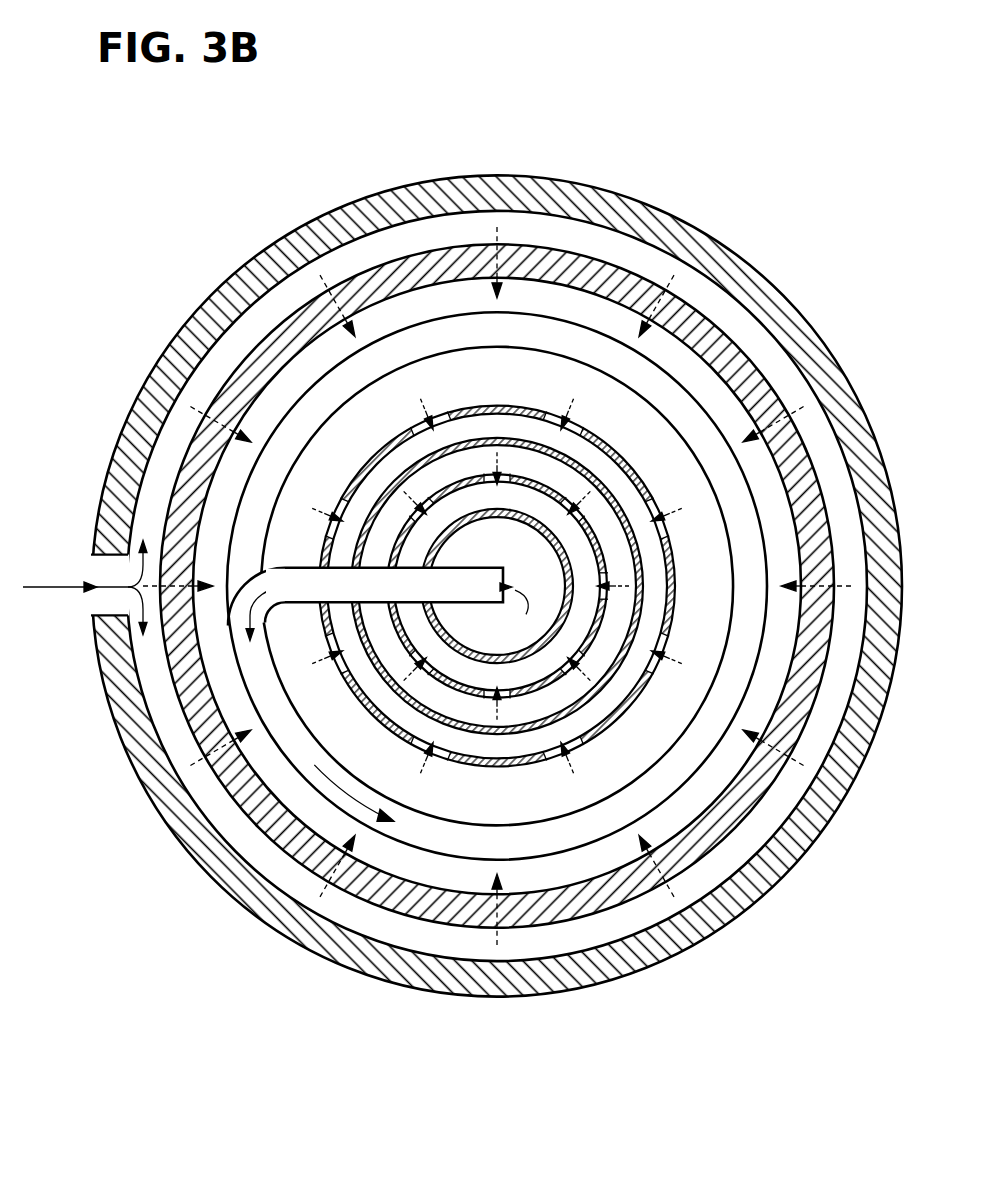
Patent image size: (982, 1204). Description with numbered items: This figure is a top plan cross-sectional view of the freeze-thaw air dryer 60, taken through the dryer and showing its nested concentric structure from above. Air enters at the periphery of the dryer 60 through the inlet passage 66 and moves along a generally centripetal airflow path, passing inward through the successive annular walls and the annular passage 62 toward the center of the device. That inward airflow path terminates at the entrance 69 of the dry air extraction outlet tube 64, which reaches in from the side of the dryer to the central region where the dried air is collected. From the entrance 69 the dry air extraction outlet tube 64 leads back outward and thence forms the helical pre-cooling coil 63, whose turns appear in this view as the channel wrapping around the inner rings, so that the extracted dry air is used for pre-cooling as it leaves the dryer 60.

The freeze-thaw air dryer 60 is at (117, 958).
The annular passage 62 is at (145, 662).
The helical pre-cooling coil 63 is at (312, 724).
The dry air extraction outlet tube 64 is at (478, 603).
The inlet port 66 is at (95, 586).
The entrance of the dry air extraction outlet tube 69 is at (505, 582).